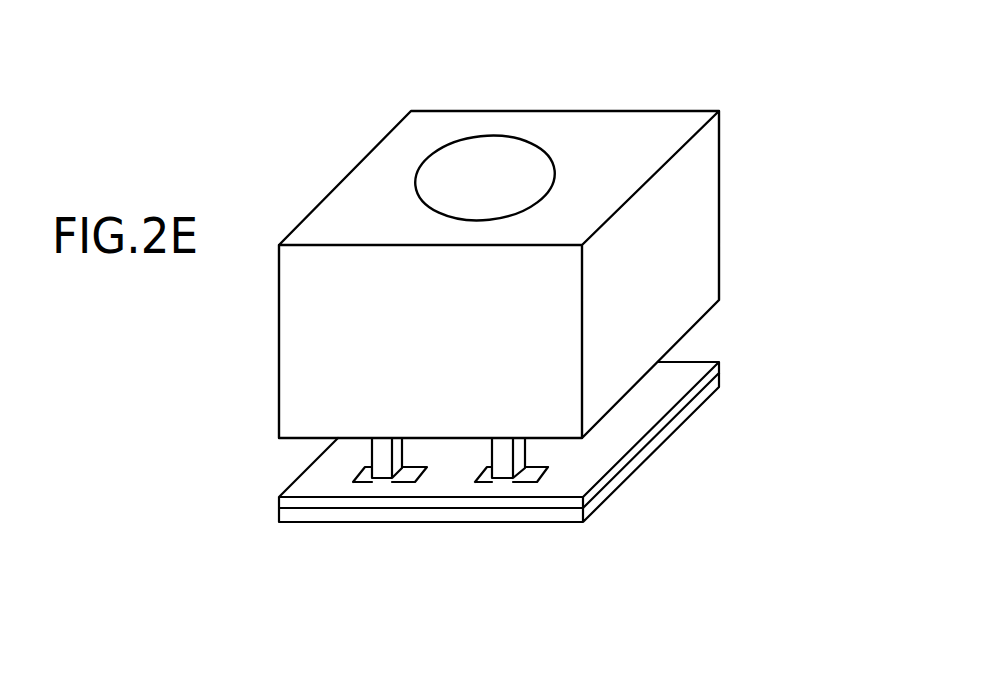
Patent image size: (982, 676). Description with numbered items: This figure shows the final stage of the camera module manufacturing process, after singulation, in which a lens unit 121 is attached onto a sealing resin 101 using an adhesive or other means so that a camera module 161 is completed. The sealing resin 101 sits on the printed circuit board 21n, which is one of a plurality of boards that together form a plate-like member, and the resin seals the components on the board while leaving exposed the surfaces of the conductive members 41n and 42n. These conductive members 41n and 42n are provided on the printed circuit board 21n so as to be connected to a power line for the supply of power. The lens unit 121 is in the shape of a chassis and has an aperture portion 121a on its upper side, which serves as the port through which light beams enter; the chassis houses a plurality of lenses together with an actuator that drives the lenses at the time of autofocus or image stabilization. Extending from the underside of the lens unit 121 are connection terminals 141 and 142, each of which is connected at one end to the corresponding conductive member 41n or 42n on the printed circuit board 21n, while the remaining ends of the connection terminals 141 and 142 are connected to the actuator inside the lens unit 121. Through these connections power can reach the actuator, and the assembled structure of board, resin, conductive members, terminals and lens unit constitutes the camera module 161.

The lens unit 121 is at (700, 250).
The aperture portion 121a is at (502, 163).
The sealing resin 101 is at (690, 375).
The printed circuit board 21n is at (695, 403).
The connection terminal 141 is at (380, 448).
The connection terminal 142 is at (502, 447).
The conductive member 41n is at (407, 477).
The conductive member 42n is at (528, 475).
The camera module 161 is at (545, 463).